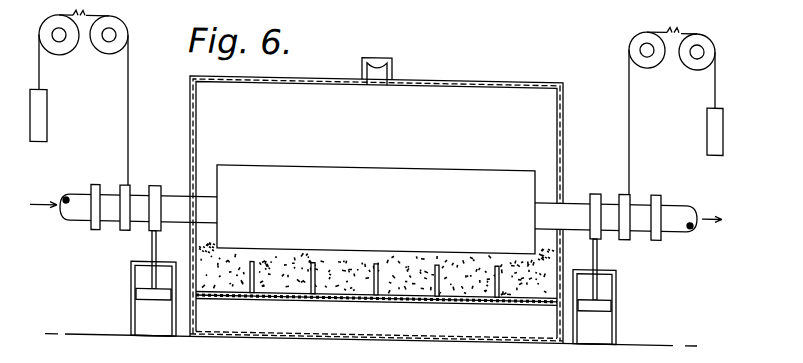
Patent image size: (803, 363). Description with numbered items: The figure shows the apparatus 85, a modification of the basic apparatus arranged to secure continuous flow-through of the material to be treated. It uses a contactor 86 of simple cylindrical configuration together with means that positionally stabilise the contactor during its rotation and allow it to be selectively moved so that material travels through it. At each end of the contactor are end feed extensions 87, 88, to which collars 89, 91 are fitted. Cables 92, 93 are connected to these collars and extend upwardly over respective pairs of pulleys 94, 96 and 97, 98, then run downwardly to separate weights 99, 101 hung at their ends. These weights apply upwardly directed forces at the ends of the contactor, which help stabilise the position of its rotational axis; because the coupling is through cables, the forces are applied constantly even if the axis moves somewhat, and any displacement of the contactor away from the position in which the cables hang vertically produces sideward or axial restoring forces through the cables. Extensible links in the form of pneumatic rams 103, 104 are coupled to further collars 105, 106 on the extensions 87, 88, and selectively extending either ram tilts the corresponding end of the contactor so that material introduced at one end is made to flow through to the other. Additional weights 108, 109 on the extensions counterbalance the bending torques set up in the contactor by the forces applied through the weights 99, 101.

The apparatus 85 is at (475, 65).
The contactor 86 is at (403, 161).
The end feed extension 87 is at (168, 183).
The end feed extension 88 is at (637, 199).
The collar 89 is at (122, 229).
The collar 91 is at (625, 229).
The cable 92 is at (128, 112).
The cable 93 is at (629, 105).
The pulley 94 is at (60, 54).
The pulley 96 is at (118, 50).
The pulley 97 is at (630, 43).
The pulley 98 is at (688, 48).
The weight 99 is at (40, 112).
The weight 101 is at (710, 123).
The pneumatic ram 103 is at (140, 311).
The pneumatic ram 104 is at (605, 317).
The collar 105 is at (157, 211).
The collar 106 is at (595, 204).
The additional weight 108 is at (100, 166).
The additional weight 109 is at (656, 229).